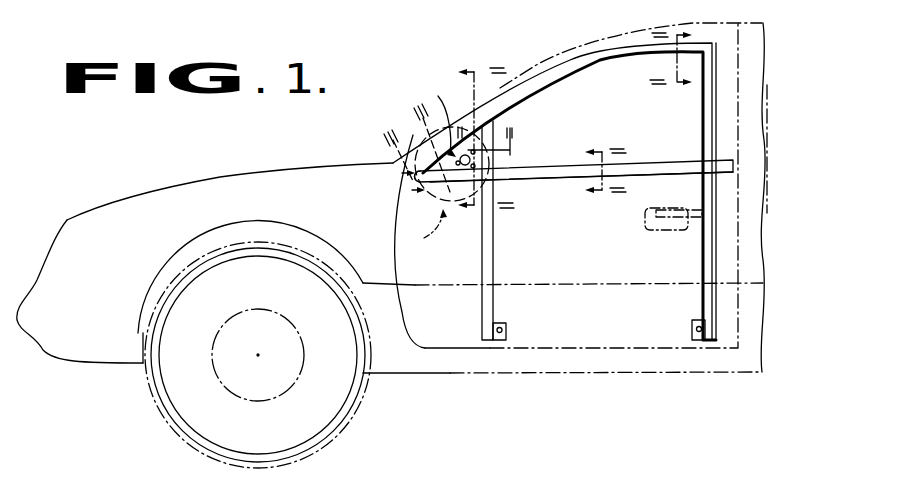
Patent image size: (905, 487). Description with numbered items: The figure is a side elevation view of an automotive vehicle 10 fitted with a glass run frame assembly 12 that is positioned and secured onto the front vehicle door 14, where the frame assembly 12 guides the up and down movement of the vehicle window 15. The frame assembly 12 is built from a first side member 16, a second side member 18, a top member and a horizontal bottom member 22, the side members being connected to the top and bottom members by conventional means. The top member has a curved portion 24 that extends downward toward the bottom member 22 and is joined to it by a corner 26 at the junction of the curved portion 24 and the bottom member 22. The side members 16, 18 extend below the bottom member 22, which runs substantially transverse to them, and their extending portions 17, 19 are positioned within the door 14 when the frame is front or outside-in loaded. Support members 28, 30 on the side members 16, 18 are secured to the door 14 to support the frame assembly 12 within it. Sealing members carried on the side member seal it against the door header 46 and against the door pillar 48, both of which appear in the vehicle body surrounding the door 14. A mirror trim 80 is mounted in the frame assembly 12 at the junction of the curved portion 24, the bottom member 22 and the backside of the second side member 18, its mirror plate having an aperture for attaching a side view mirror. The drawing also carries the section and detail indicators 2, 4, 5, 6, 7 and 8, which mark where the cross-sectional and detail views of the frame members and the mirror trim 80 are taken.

The vehicle 10 is at (163, 184).
The glass run frame assembly 12 is at (444, 259).
The vehicle door 14 is at (574, 340).
The vehicle window 15 is at (625, 109).
The first side member 16 is at (720, 147).
The extending portion 17 is at (710, 245).
The second side member 18 is at (502, 167).
The extending portion 19 is at (490, 268).
The bottom member 22 is at (557, 182).
The curved portion 24 is at (533, 90).
The corner 26 is at (413, 174).
The support member 28 is at (699, 342).
The support member 30 is at (499, 342).
The door header 46 is at (592, 36).
The door pillar 48 is at (727, 110).
The mirror trim 80 is at (424, 188).
The section line 2- 2 is at (671, 54).
The section line 4- 4 is at (605, 170).
The detail view 5 is at (424, 230).
The section line 6- 6 is at (477, 123).
The section line 7- 7 is at (478, 143).
The section line 8- 8 is at (417, 163).